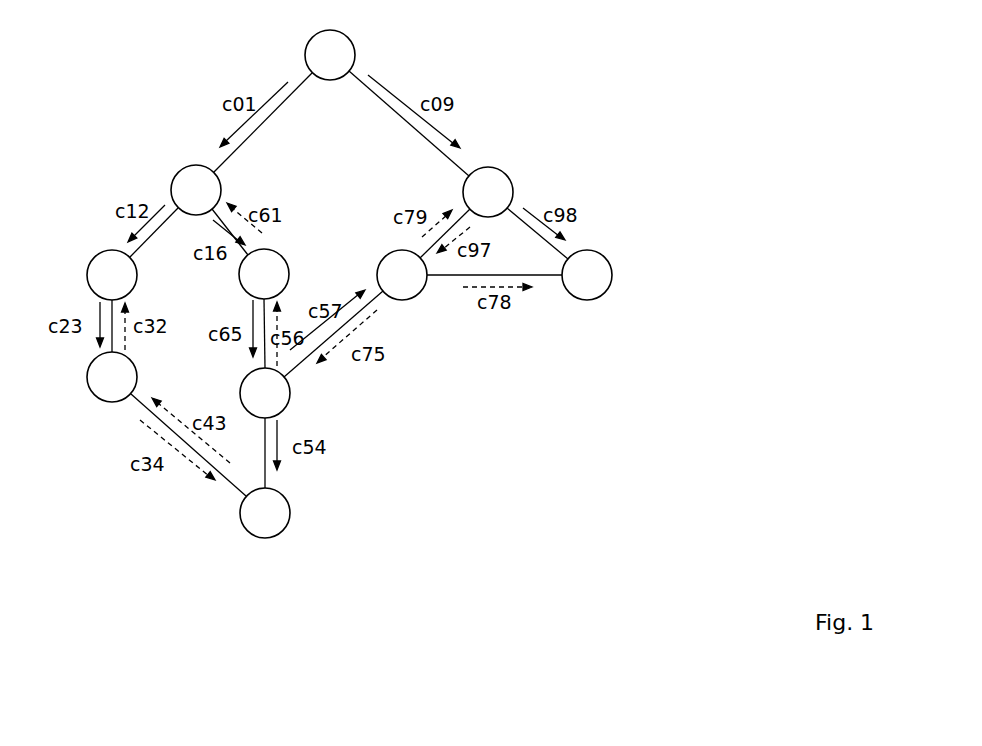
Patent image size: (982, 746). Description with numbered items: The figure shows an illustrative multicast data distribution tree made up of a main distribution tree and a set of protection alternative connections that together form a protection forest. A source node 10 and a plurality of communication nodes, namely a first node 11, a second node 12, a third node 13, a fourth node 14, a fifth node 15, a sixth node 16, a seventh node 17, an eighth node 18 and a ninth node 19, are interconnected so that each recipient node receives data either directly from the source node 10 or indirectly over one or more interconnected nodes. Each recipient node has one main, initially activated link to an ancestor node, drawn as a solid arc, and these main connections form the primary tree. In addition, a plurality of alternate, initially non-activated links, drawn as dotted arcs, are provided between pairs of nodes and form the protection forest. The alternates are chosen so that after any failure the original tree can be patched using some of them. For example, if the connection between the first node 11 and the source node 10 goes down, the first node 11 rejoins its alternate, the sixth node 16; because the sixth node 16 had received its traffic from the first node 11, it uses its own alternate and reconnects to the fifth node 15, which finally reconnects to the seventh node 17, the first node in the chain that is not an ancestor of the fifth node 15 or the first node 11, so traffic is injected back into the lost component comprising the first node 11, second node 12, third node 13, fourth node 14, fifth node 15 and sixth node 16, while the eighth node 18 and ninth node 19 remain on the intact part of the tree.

The source node 10 is at (348, 37).
The first node 11 is at (183, 165).
The second node 12 is at (100, 250).
The third node 13 is at (87, 377).
The fourth node 14 is at (283, 493).
The fifth node 15 is at (243, 384).
The sixth node 16 is at (282, 250).
The seventh node 17 is at (413, 298).
The eighth node 18 is at (603, 253).
The ninth node 19 is at (503, 167).